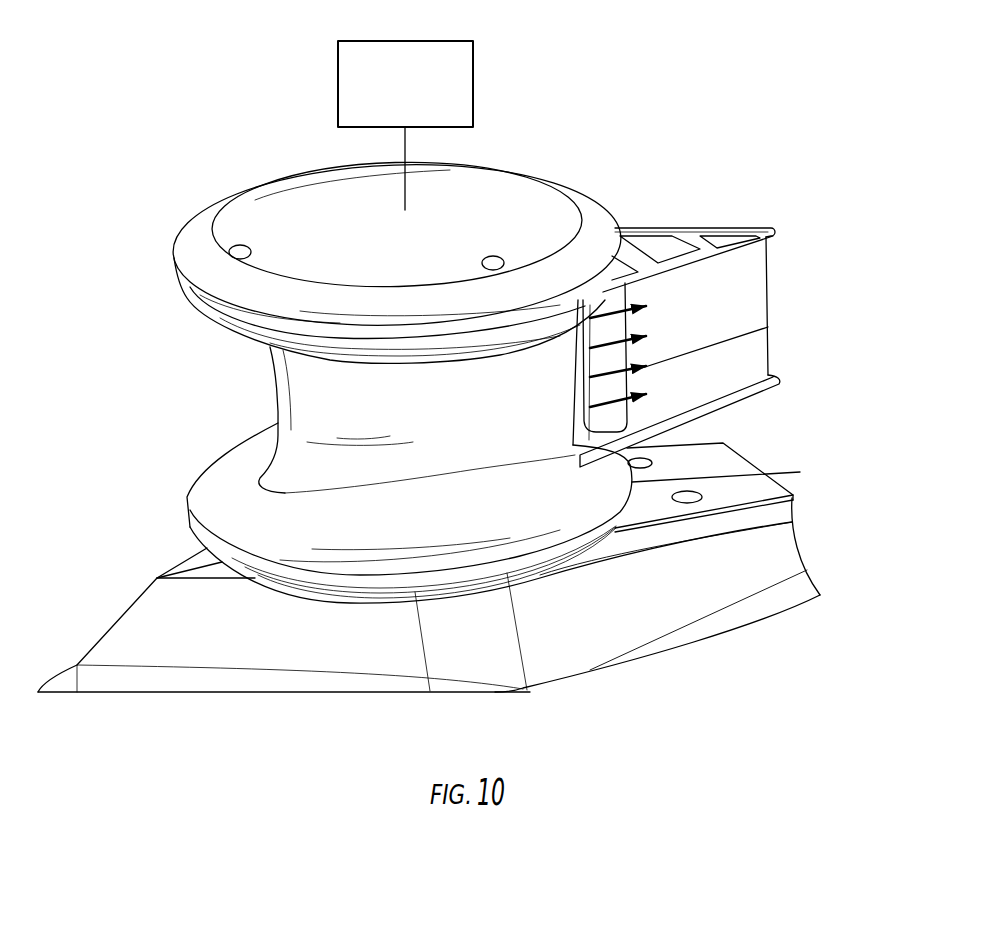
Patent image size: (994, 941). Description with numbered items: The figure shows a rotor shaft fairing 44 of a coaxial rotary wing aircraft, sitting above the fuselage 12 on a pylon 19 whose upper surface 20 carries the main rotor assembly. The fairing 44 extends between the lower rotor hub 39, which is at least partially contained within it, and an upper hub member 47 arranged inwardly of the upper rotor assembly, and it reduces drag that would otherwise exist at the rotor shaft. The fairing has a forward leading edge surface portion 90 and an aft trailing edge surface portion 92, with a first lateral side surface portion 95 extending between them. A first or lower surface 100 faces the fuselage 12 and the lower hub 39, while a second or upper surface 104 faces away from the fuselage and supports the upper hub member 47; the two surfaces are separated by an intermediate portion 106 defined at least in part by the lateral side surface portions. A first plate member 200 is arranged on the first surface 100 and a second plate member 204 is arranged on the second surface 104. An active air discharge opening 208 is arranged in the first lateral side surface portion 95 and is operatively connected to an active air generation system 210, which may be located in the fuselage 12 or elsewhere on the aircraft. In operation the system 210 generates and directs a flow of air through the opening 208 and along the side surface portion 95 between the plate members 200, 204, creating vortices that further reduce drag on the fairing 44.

The fuselage 12 is at (190, 637).
The pylon 19 is at (128, 610).
The upper surface 20 is at (193, 577).
The lower rotor hub 39 is at (497, 565).
The rotor shaft fairing 44 is at (243, 377).
The upper hub member 47 is at (200, 232).
The leading edge surface portion 90 is at (277, 407).
The trailing edge surface portion 92 is at (767, 291).
The first lateral side surface portion 95 is at (752, 348).
The first surface 100 is at (680, 440).
The second surface 104 is at (650, 247).
The intermediate portion 106 is at (490, 430).
The first plate member 200 is at (760, 400).
The second plate member 204 is at (670, 213).
The active air discharge opening 208 is at (615, 415).
The active air generation system 210 is at (320, 88).